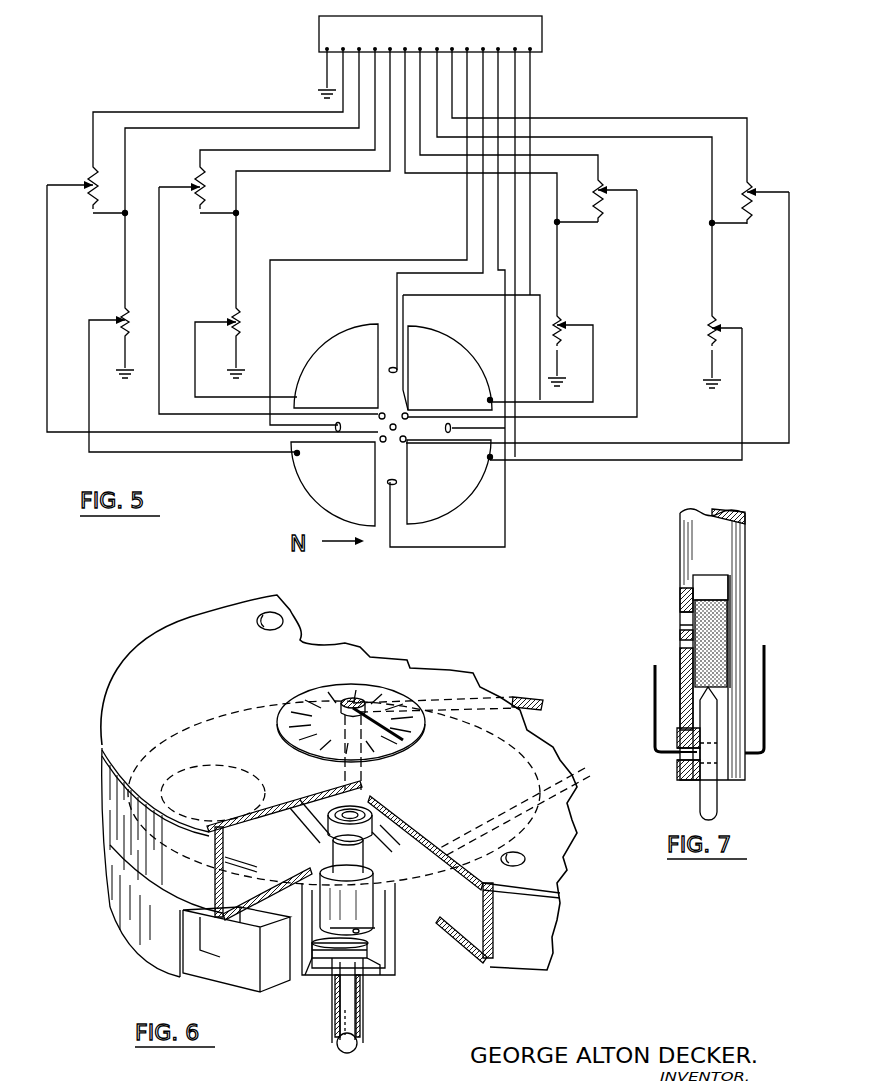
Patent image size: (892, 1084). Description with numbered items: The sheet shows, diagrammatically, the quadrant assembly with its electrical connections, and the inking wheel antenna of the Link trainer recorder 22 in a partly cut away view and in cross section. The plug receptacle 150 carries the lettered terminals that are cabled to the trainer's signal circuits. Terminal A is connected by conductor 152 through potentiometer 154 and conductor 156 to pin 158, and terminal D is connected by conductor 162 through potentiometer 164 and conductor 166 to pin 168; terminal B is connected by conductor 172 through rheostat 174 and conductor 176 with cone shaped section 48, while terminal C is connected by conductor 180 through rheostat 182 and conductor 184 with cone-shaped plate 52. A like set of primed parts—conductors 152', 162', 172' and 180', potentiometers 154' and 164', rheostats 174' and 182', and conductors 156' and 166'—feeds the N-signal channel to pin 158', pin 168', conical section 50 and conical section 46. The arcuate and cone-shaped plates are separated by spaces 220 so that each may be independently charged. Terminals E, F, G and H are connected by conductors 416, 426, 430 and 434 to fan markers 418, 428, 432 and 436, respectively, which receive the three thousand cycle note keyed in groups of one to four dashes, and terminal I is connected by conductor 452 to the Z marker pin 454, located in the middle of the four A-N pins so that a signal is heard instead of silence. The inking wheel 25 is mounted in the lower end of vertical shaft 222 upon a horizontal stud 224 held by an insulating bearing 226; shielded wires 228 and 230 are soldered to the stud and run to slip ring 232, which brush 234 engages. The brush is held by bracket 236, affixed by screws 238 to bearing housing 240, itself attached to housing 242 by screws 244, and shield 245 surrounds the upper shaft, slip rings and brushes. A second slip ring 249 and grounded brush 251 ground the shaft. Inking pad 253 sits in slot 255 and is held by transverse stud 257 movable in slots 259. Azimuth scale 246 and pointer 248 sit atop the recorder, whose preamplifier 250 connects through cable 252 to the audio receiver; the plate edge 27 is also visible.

In FIG. 5, the plug receptacle 150 is at (322, 44).
In FIG. 5, the conductor 452 is at (535, 88).
In FIG. 5, the lead wire 162' is at (218, 106).
In FIG. 5, the lead wire 180' is at (242, 177).
In FIG. 5, the conductor 162 is at (287, 112).
In FIG. 5, the conductor 180 is at (313, 177).
In FIG. 5, the lead wire 172' is at (481, 181).
In FIG. 5, the conductor 172 is at (551, 112).
In FIG. 5, the lead wire 152' is at (574, 181).
In FIG. 5, the conductor 152 is at (599, 113).
In FIG. 5, the conductor 434 is at (462, 220).
In FIG. 5, the conductor 430 is at (452, 276).
In FIG. 5, the conductor 426 is at (503, 305).
In FIG. 5, the conductor 416 is at (513, 362).
In FIG. 5, the spaces 220 is at (388, 333).
In FIG. 5, the potentiometer 164' is at (86, 185).
In FIG. 5, the potentiometer 164 is at (193, 185).
In FIG. 5, the potentiometer 154' is at (596, 212).
In FIG. 5, the potentiometer 154 is at (750, 213).
In FIG. 5, the wiper lead 166' is at (212, 308).
In FIG. 5, the conductor 166 is at (268, 300).
In FIG. 5, the potentiometer 182' is at (181, 371).
In FIG. 5, the rheostat 182 is at (208, 332).
In FIG. 5, the conductor 184 is at (195, 381).
In FIG. 5, the potentiometer 174' is at (550, 347).
In FIG. 5, the rheostat 174 is at (737, 338).
In FIG. 5, the wiper lead 156' is at (541, 303).
In FIG. 5, the conductor 156 is at (597, 317).
In FIG. 5, the conductor 176 is at (612, 460).
In FIG. 5, the cone-shaped plate 52 is at (333, 355).
In FIG. 5, the conical section 50 is at (452, 352).
In FIG. 5, the conical section 46 is at (326, 495).
In FIG. 5, the cone shaped section 48 is at (464, 488).
In FIG. 5, the fan marker 432 is at (388, 368).
In FIG. 5, the pin 168 is at (364, 408).
In FIG. 5, the pin 158' is at (429, 407).
In FIG. 5, the Z marker pin 454 is at (390, 427).
In FIG. 5, the pin 168' is at (364, 454).
In FIG. 5, the pin 158 is at (418, 453).
In FIG. 5, the fan marker 428 is at (450, 434).
In FIG. 5, the fan marker 418 is at (388, 486).
In FIG. 5, the fan marker 436 is at (336, 424).
In FIG. 6, the Link trainer recorder 22 is at (143, 645).
In FIG. 6, the preamplifier 250 is at (158, 950).
In FIG. 6, the azimuth scale 246 is at (315, 700).
In FIG. 6, the pointer 248 is at (395, 720).
In FIG. 6, the cable 252 is at (522, 700).
In FIG. 6, the plate edge 27 is at (573, 778).
In FIG. 6, the screws 244 is at (325, 835).
In FIG. 6, the screws 238 is at (273, 892).
In FIG. 6, the bracket 236 is at (305, 935).
In FIG. 6, the brush 251 is at (310, 950).
In FIG. 6, the bearing housing 240 is at (367, 888).
In FIG. 6, the second slip ring 249 is at (365, 937).
In FIG. 6, the slip ring 232 is at (370, 956).
In FIG. 6, the housing 242 is at (470, 948).
In FIG. 6, the shield 245 is at (385, 970).
In FIG. 6, the brush 234 is at (325, 972).
In FIG. 6, the vertical shaft 222 is at (358, 988).
In FIG. 7, the vertical shaft 222 is at (690, 556).
In FIG. 6, the shielded wire 230 is at (333, 1010).
In FIG. 7, the shielded wire 230 is at (657, 700).
In FIG. 6, the shielded wire 228 is at (362, 1008).
In FIG. 7, the shielded wire 228 is at (764, 710).
In FIG. 6, the inking pad 253 is at (362, 1030).
In FIG. 7, the inking pad 253 is at (720, 645).
In FIG. 6, the inking wheel 25 is at (342, 1048).
In FIG. 7, the inking wheel 25 is at (714, 802).
In FIG. 7, the slot 255 is at (722, 582).
In FIG. 7, the slots 259 is at (683, 614).
In FIG. 7, the transverse stud 257 is at (683, 636).
In FIG. 7, the horizontal stud 224 is at (678, 758).
In FIG. 7, the insulating bearing 226 is at (677, 768).